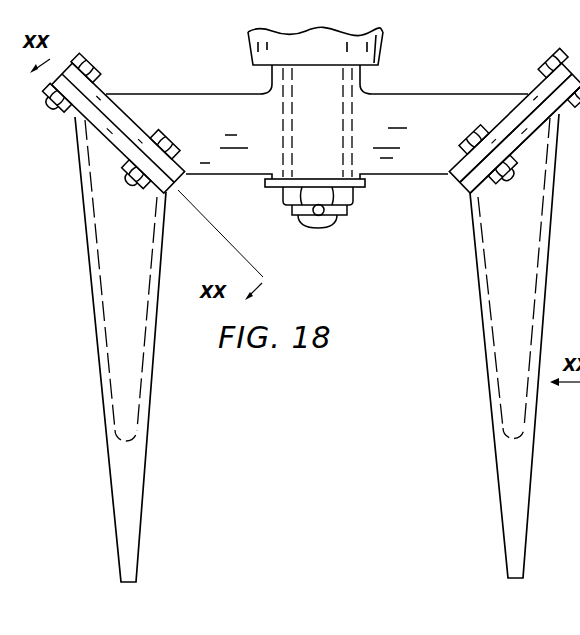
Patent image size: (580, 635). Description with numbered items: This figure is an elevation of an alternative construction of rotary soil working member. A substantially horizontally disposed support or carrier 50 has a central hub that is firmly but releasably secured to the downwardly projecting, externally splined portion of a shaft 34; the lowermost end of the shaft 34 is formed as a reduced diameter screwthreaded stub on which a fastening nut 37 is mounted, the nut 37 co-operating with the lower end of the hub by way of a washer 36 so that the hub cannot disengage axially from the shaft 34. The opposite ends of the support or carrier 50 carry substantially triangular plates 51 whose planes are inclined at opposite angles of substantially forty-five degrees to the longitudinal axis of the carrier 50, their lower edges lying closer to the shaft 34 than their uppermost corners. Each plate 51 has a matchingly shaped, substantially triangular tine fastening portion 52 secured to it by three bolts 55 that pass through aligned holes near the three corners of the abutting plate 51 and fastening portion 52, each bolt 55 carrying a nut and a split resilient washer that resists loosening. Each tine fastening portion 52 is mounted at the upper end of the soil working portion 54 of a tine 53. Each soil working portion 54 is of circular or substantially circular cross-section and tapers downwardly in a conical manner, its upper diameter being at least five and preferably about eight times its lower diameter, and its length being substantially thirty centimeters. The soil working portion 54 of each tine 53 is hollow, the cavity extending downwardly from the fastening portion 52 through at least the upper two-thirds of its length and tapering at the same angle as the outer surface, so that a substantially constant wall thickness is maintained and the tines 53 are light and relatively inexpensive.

The shaft 34 is at (322, 221).
The washer 36 is at (279, 186).
The fastening nut 37 is at (293, 199).
The support or carrier 50 is at (206, 94).
The substantially triangular plate 51 is at (109, 116).
The tine fastening portion 52 is at (523, 130).
The tine 53 is at (158, 400).
The soil working portion 54 is at (128, 460).
The bolt 55 is at (82, 70).